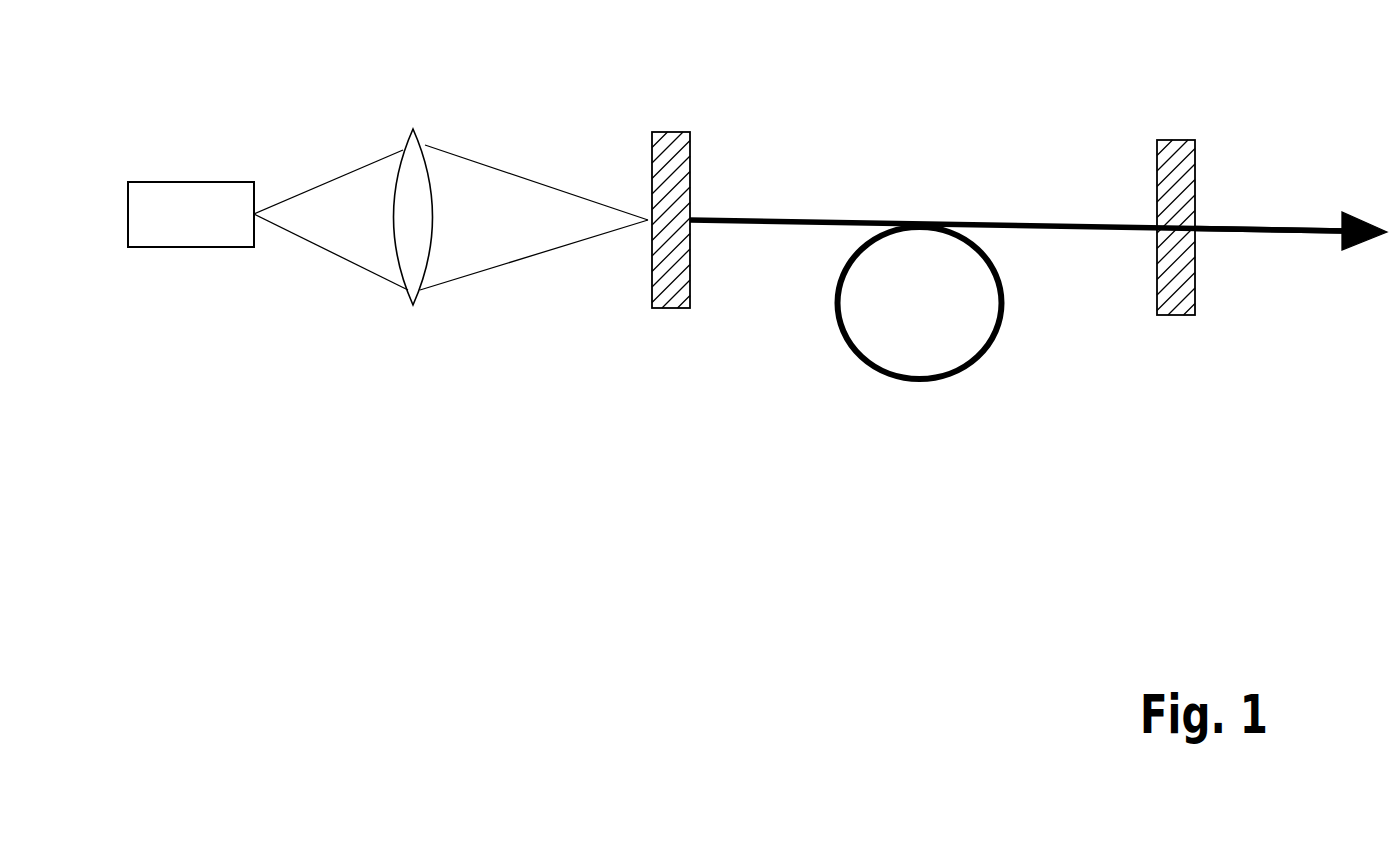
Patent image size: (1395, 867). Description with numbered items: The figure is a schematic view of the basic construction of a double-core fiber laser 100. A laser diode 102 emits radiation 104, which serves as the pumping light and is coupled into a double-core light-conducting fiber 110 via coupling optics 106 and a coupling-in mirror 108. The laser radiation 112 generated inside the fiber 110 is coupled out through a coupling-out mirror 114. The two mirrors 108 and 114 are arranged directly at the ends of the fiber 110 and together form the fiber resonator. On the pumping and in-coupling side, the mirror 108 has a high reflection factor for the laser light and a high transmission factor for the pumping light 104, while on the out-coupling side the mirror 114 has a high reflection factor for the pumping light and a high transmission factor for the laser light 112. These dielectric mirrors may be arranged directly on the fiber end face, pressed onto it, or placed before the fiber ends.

The fiber laser 100 is at (934, 136).
The laser diode 102 is at (185, 227).
The radiation 104 is at (317, 227).
The coupling optics 106 is at (408, 178).
The coupling-in mirror 108 is at (657, 308).
The double-core light-conducting fiber 110 is at (738, 230).
The laser radiation 112 is at (1232, 233).
The coupling-out mirror 114 is at (1173, 310).